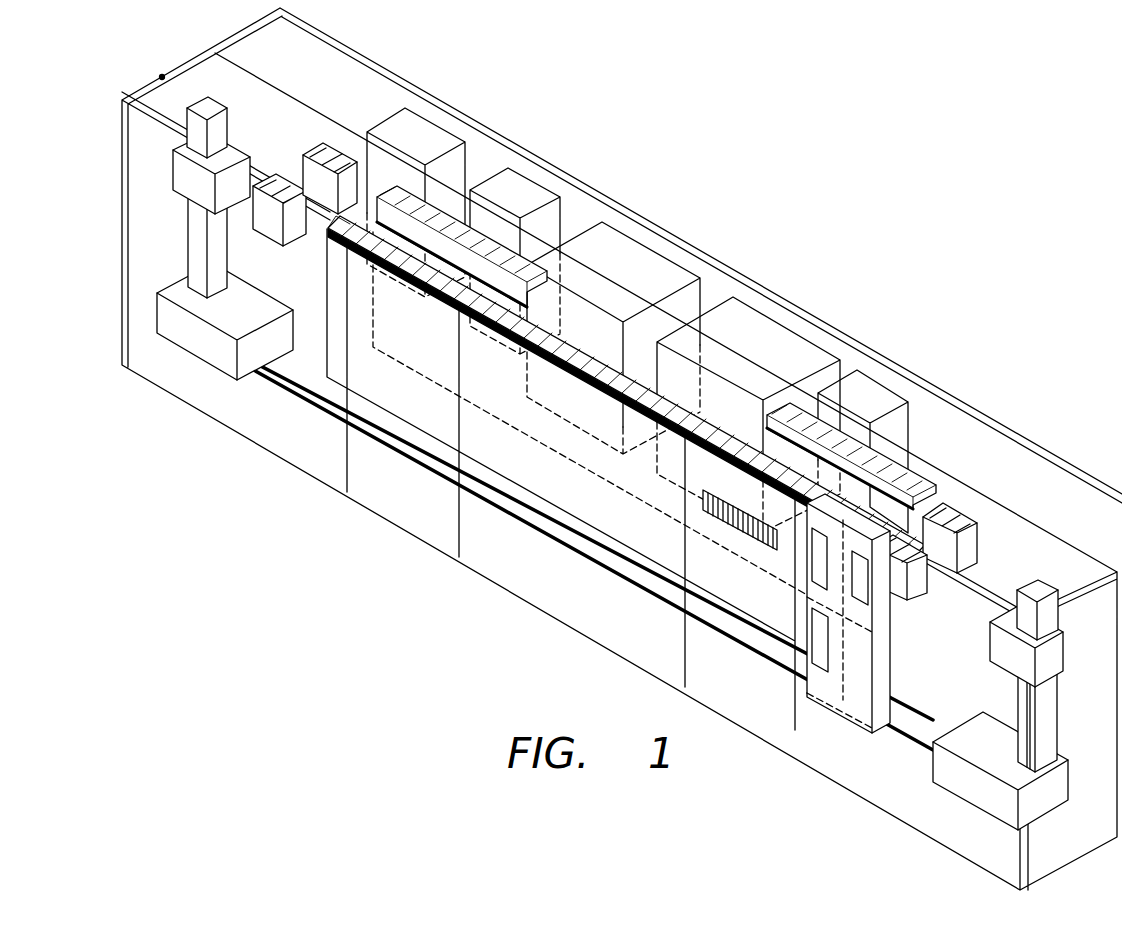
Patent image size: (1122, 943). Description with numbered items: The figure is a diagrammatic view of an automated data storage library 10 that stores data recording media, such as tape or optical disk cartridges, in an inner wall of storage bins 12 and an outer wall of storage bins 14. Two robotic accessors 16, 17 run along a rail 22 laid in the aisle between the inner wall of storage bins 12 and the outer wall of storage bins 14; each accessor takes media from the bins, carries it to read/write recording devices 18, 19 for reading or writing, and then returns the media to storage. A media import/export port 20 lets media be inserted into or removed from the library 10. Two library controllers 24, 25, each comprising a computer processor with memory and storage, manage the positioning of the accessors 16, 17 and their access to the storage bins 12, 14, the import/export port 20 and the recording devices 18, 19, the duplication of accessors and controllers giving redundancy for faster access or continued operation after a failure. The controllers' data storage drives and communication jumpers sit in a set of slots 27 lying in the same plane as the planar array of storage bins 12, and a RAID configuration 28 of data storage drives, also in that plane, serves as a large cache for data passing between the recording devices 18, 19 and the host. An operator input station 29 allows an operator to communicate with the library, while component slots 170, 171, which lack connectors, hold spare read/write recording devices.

The automated data storage library 10 is at (793, 156).
The inner wall of storage bins 12 is at (453, 258).
The outer wall of storage bins 14 is at (437, 420).
The accessor 16 is at (187, 187).
The accessor 17 is at (1058, 652).
The read/write recording device 18 is at (328, 157).
The read/write recording device 19 is at (952, 513).
The media import/export port 20 is at (858, 692).
The rail 22 is at (527, 528).
The library controller 24 is at (425, 135).
The library controller 25 is at (870, 393).
The set of data storage drive and communication jumper slots 27 is at (767, 335).
The RAID configuration of data storage drives 28 is at (633, 257).
The operator input station 29 is at (523, 190).
The component slot 170 is at (275, 180).
The component slot 171 is at (917, 592).